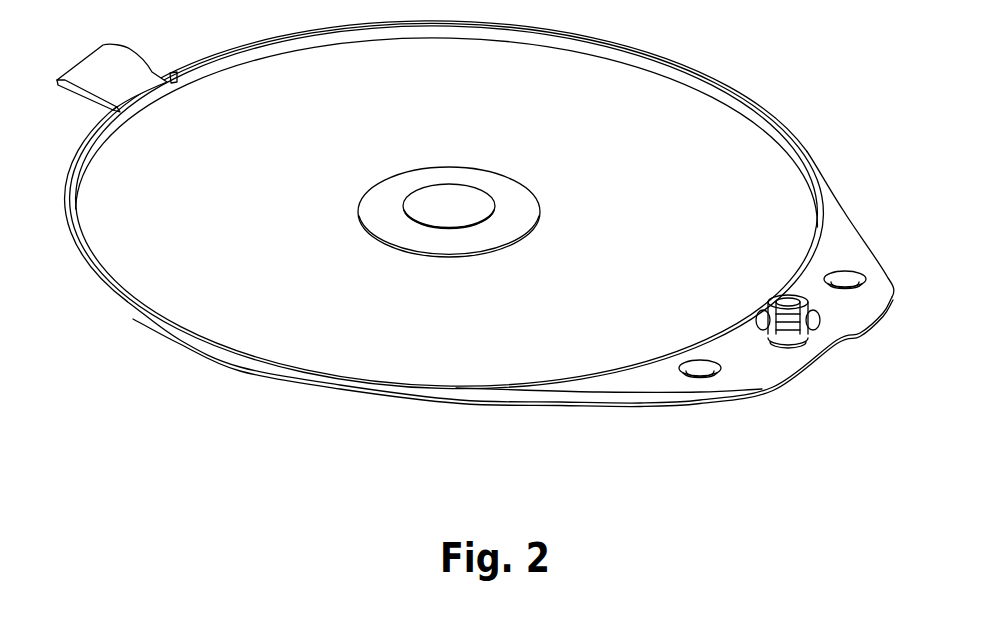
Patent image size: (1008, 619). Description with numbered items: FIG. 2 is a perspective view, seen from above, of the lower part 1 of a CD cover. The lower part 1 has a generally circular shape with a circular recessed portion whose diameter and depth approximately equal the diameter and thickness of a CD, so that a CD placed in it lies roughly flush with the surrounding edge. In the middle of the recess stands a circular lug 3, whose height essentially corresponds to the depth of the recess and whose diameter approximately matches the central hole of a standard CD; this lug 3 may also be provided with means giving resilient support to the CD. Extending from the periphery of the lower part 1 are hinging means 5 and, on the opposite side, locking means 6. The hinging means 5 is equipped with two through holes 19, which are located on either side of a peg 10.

The lower part 1 is at (462, 85).
The circular lug 3 is at (483, 200).
The hinging means 5 is at (765, 355).
The locking means 6 is at (128, 70).
The peg 10 is at (805, 325).
The through hole 19 is at (855, 286).